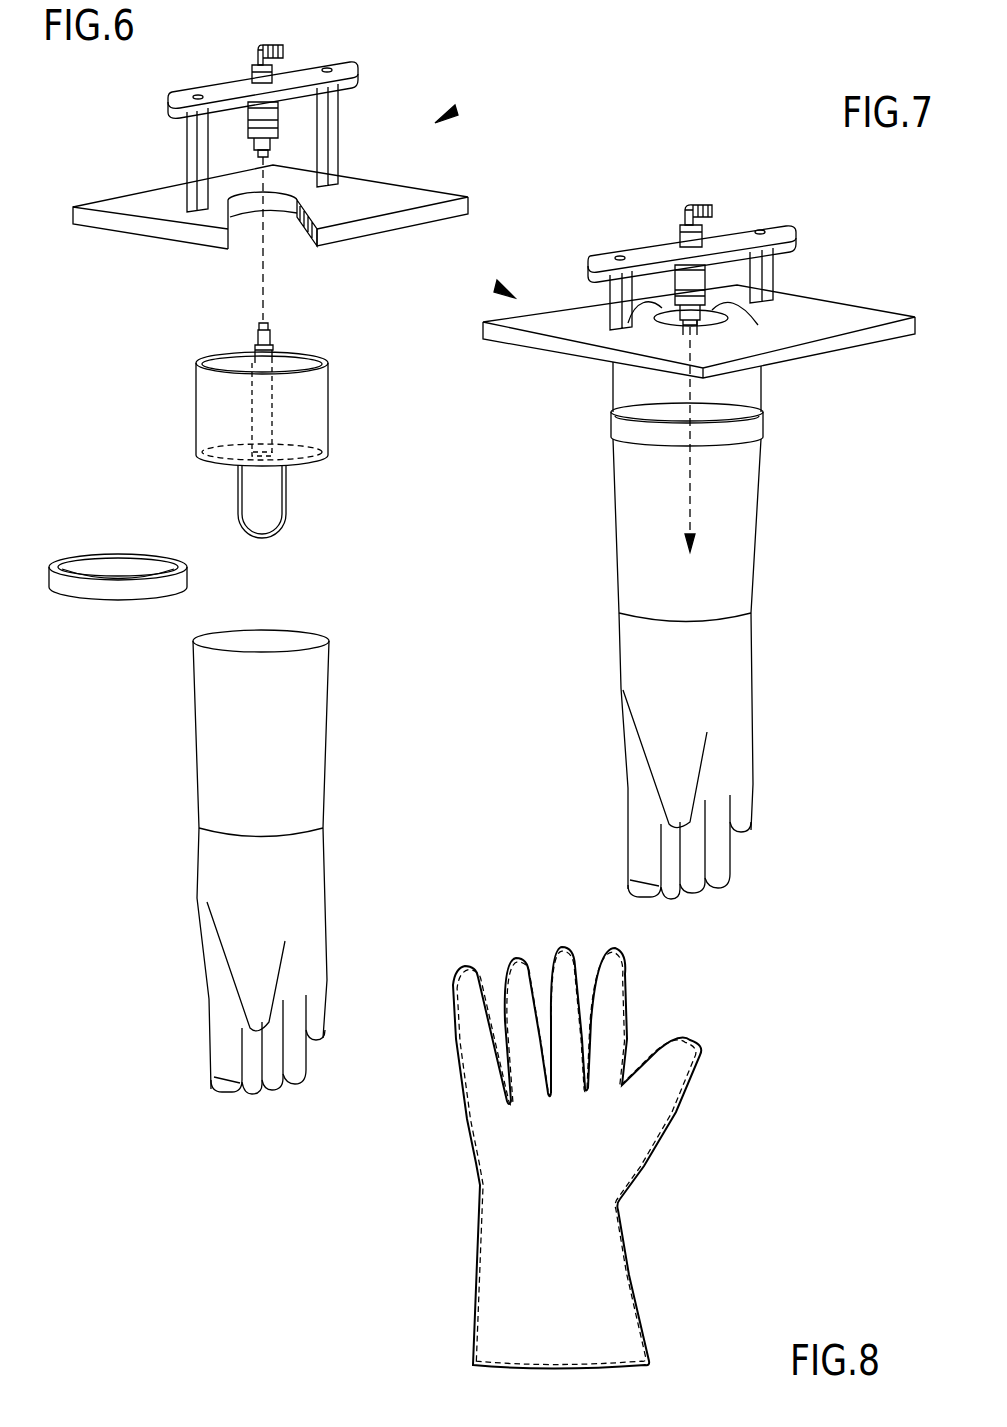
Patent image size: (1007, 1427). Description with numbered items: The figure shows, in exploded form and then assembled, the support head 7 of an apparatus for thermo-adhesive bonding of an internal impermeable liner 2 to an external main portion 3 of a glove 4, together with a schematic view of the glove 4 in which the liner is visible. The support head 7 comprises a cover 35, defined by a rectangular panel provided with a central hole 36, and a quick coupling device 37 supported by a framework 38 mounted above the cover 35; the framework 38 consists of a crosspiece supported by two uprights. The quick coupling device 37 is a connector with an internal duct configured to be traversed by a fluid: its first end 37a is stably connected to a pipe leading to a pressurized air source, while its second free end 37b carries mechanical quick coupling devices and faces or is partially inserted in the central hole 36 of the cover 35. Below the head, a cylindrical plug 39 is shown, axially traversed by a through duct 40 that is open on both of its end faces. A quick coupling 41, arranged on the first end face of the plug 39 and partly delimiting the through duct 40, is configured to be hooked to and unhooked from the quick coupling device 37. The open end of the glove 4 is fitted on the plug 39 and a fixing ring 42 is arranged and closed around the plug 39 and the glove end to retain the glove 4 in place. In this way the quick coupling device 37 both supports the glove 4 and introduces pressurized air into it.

In FIG. 8, the internal impermeable liner 2 is at (636, 1265).
In FIG. 8, the external main portion 3 is at (640, 1291).
In FIG. 6, the glove 4 is at (180, 744).
In FIG. 7, the glove 4 is at (596, 596).
In FIG. 8, the glove 4 is at (627, 1158).
In FIG. 6, the support head 7 is at (452, 110).
In FIG. 6, the cover 35 is at (423, 197).
In FIG. 7, the cover 35 is at (827, 315).
In FIG. 6, the central hole 36 is at (280, 205).
In FIG. 7, the central hole 36 is at (717, 317).
In FIG. 6, the quick coupling device 37 is at (262, 124).
In FIG. 7, the quick coupling device 37 is at (680, 290).
In FIG. 6, the first end 37a is at (283, 53).
In FIG. 7, the first end 37a is at (698, 203).
In FIG. 6, the second free end 37b is at (257, 153).
In FIG. 6, the framework 38 is at (337, 115).
In FIG. 7, the framework 38 is at (790, 237).
In FIG. 6, the plug 39 is at (203, 405).
In FIG. 7, the plug 39 is at (616, 396).
In FIG. 6, the through duct 40 is at (273, 398).
In FIG. 6, the quick coupling 41 is at (253, 342).
In FIG. 7, the quick coupling 41 is at (663, 305).
In FIG. 6, the fixing ring 42 is at (117, 560).
In FIG. 7, the fixing ring 42 is at (613, 430).